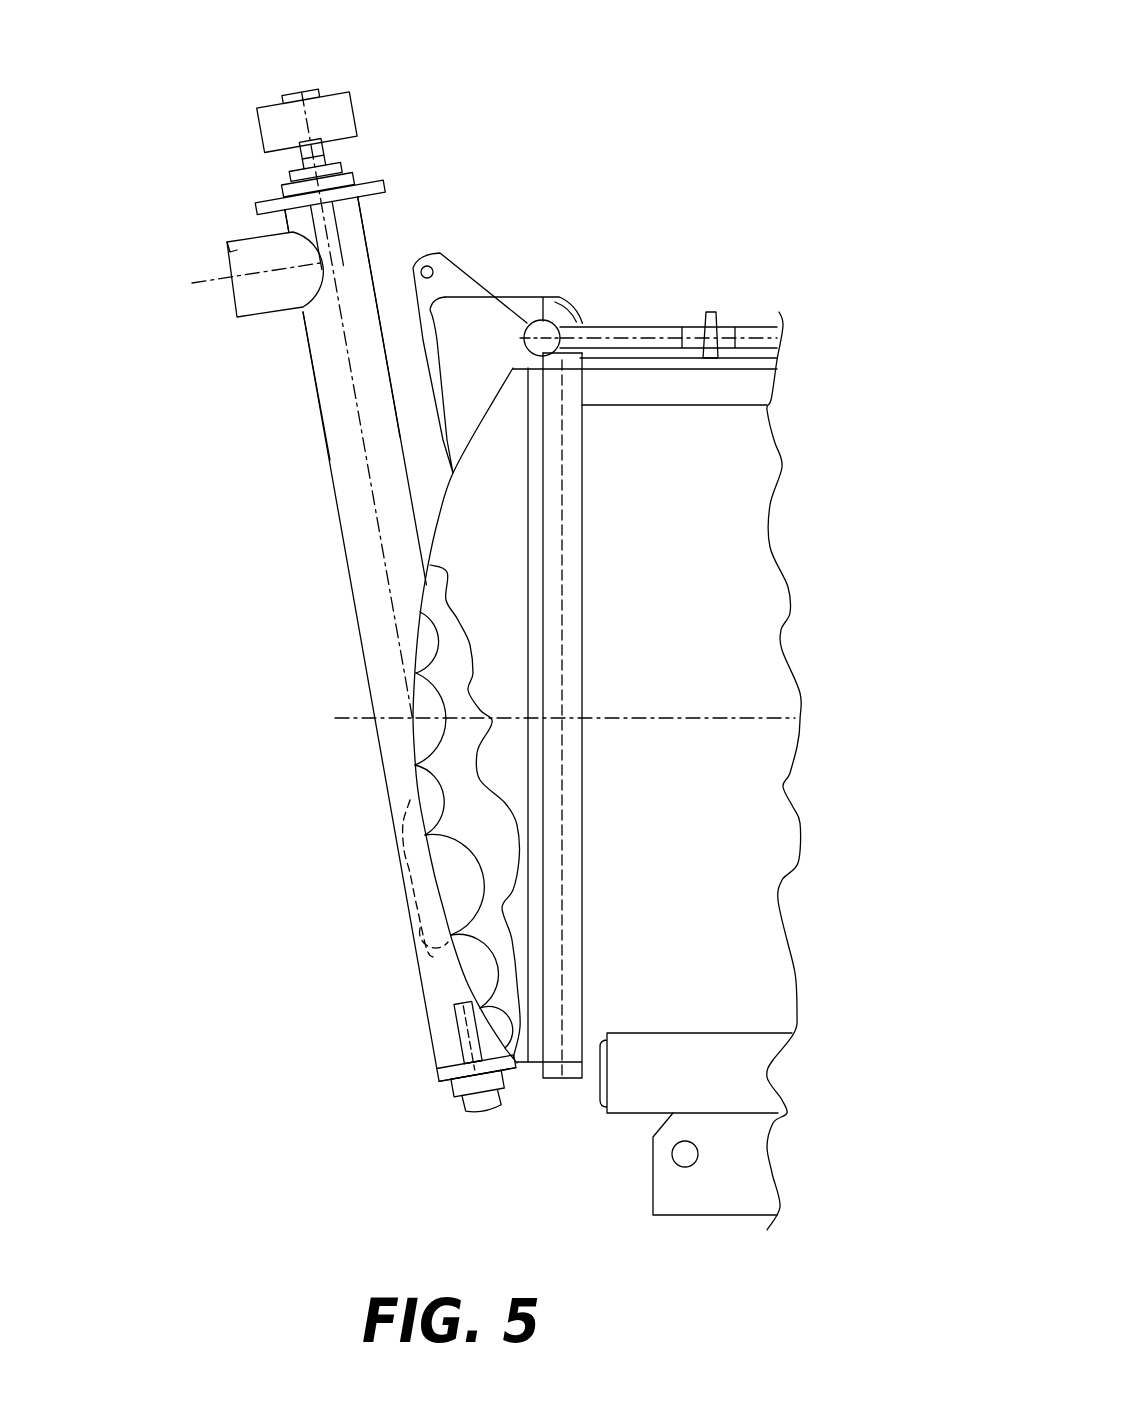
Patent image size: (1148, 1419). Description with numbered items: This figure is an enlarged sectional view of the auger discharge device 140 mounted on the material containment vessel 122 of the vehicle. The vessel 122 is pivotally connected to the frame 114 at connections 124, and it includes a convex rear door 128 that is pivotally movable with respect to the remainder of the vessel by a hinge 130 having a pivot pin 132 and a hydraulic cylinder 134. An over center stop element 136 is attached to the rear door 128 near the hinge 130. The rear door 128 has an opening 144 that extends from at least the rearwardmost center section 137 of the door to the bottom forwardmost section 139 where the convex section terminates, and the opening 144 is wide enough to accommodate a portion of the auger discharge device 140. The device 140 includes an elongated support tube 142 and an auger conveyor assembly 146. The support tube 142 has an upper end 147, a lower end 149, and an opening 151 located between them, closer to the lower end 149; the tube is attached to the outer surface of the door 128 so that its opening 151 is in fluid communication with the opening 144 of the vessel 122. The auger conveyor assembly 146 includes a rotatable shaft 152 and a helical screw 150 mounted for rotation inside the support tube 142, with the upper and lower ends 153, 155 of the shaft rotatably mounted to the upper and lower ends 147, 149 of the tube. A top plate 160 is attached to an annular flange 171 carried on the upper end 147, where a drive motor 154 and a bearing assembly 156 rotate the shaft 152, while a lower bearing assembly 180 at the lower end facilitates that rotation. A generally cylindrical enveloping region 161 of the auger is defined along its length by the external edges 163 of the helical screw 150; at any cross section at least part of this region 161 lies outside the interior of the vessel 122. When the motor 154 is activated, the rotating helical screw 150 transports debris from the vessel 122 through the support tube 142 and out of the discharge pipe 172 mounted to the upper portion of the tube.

The frame 114 is at (723, 1207).
The material containment vessel 122 is at (733, 805).
The connections 124 is at (673, 1153).
The convex rear door 128 is at (500, 552).
The hinge 130 is at (507, 298).
The pivot pin 132 is at (547, 313).
The hydraulic cylinder 134 is at (667, 327).
The over center stop element 136 is at (443, 253).
The rearwardmost center section 137 is at (412, 717).
The bottom forwardmost section 139 is at (520, 1073).
The auger discharge device 140 is at (303, 387).
The elongated support tube 142 is at (332, 473).
The opening 144 is at (413, 788).
The auger conveyor assembly 146 is at (383, 572).
The upper end 147 is at (363, 223).
The lower end 149 is at (457, 1073).
The helical screw 150 is at (405, 838).
The opening 151 is at (413, 750).
The rotatable shaft 152 is at (457, 985).
The upper end 153 is at (300, 167).
The drive motor 154 is at (357, 93).
The lower end 155 is at (457, 1040).
The bearing assembly 156 is at (340, 157).
The top plate 160 is at (278, 202).
The enveloping region 161 is at (427, 867).
The external edges 163 is at (420, 933).
The annular flange 171 is at (230, 232).
The discharge pipe 172 is at (227, 260).
The lower bearing assembly 180 is at (448, 1108).